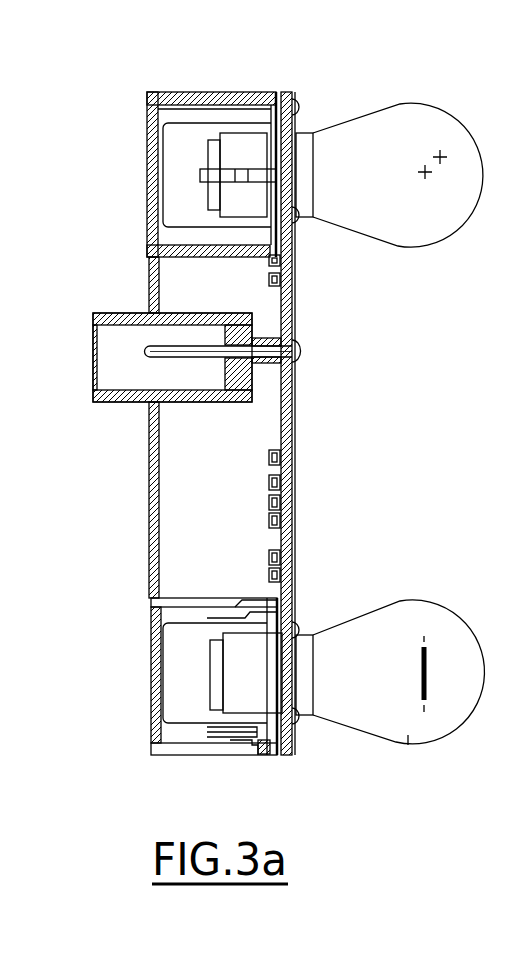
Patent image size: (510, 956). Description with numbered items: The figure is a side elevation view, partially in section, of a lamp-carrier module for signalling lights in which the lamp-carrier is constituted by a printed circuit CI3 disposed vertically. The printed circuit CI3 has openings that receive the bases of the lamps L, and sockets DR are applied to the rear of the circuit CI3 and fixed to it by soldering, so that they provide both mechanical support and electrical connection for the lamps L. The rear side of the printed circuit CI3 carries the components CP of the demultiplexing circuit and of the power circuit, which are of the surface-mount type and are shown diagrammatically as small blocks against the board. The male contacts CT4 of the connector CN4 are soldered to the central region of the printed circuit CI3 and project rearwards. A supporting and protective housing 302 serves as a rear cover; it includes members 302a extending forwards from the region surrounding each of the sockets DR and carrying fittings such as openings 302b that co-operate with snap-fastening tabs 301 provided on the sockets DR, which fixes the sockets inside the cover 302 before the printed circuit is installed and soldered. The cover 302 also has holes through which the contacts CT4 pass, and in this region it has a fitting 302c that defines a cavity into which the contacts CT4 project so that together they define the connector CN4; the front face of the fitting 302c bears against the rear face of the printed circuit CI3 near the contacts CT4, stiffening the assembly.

The supporting and protective housing 302 is at (150, 505).
The members 302a is at (243, 92).
The openings 302b is at (240, 605).
The fitting 302c is at (127, 402).
The connector CN4 is at (120, 371).
The male contacts CT4 is at (148, 336).
The printed circuit CI3 is at (278, 420).
The components CP is at (268, 468).
The sockets DR is at (182, 142).
The snap-fastening tabs 301 is at (205, 178).
The lamp-carriers L is at (417, 218).